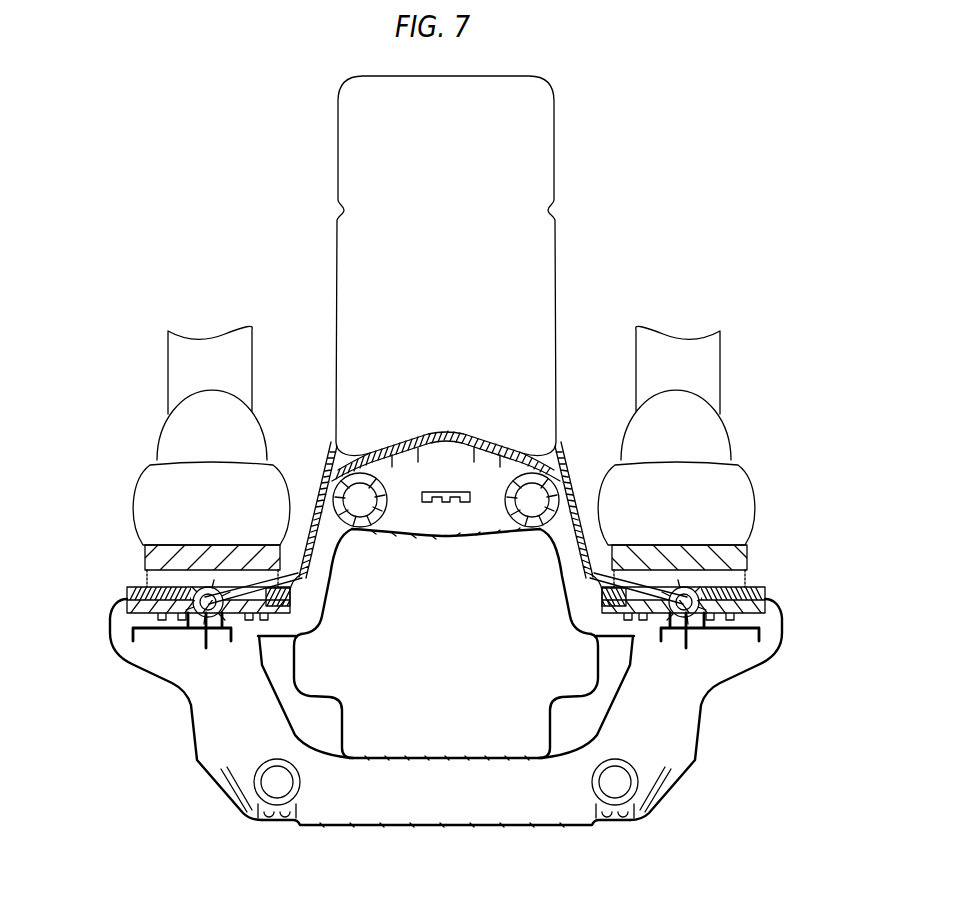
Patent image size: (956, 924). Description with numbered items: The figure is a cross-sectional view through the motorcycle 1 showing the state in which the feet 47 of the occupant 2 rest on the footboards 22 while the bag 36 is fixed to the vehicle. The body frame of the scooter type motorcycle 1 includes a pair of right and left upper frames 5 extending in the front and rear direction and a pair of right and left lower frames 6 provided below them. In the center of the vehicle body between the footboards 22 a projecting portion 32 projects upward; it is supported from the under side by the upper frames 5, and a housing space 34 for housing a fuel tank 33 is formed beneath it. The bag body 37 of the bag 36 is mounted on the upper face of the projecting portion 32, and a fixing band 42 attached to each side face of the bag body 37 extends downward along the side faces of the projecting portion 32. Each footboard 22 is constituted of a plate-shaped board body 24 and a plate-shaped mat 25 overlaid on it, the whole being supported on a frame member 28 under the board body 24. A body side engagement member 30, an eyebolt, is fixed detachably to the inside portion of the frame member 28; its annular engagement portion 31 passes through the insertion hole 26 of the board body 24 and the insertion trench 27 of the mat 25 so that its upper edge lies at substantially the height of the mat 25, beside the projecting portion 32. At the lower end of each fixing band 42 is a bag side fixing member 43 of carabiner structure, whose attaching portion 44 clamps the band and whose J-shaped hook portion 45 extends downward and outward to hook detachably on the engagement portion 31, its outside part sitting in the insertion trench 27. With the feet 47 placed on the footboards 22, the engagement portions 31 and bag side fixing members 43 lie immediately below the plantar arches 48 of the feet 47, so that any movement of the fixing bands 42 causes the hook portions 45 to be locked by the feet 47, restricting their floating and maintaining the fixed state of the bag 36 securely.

The motorcycle 1 is at (451, 738).
The occupant 2 is at (252, 352).
The upper frame 5 is at (348, 530).
The lower frame 6 is at (301, 784).
The footboard 22 is at (122, 570).
The board body 24 is at (451, 709).
The mat 25 is at (452, 606).
The insertion hole 26 is at (200, 618).
The insertion trench 27 is at (160, 613).
The frame member 28 is at (160, 658).
The body side engagement member 30 is at (221, 648).
The engagement portion 31 is at (226, 612).
The projecting portion 32 is at (455, 431).
The fuel tank 33 is at (428, 762).
The housing space 34 is at (498, 802).
The bag 36 is at (499, 266).
The bag body 37 is at (557, 323).
The fixing band 42 is at (326, 483).
The bag side fixing member 43 is at (296, 638).
The attaching portion 44 is at (302, 573).
The hook portion 45 is at (315, 592).
The foot 47 is at (140, 470).
The plantar arch 48 is at (284, 640).